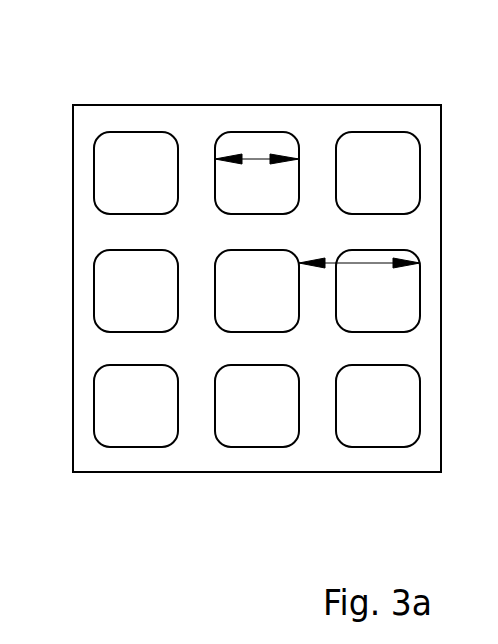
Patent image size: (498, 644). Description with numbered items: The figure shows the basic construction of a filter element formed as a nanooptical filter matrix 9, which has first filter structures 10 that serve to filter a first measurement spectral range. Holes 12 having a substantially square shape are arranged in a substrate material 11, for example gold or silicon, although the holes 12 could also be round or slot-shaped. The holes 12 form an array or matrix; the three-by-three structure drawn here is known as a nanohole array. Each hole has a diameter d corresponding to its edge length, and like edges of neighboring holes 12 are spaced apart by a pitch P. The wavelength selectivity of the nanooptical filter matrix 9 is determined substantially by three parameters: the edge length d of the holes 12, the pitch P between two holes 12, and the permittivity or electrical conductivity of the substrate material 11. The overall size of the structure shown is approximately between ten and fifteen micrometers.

The nanooptical filter matrix 9 is at (168, 95).
The first filter structures 10 is at (236, 245).
The substrate material 11 is at (93, 228).
The holes 12 is at (103, 287).